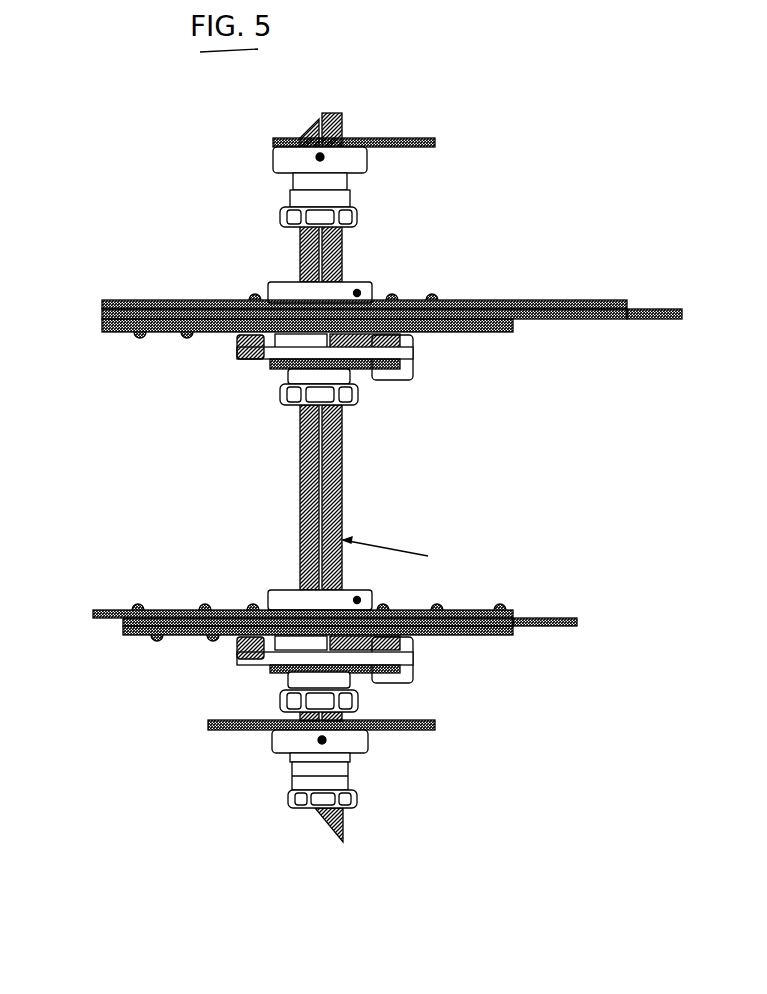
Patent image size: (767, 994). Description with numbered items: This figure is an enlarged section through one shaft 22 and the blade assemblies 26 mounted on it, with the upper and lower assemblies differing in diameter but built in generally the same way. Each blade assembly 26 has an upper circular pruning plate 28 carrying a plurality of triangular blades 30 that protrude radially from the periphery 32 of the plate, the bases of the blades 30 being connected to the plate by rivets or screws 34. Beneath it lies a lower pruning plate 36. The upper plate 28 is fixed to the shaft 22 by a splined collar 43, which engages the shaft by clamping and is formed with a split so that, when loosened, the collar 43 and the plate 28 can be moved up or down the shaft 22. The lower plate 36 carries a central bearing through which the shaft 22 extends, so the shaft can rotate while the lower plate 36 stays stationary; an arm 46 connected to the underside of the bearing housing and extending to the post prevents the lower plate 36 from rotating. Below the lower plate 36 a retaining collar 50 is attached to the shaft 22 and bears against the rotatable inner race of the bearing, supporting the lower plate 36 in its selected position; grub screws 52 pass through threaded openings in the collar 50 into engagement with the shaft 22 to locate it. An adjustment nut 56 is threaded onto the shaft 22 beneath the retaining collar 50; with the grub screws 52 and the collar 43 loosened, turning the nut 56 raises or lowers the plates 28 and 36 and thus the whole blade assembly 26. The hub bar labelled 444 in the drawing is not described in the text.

The shaft 22 is at (343, 247).
The blade assembly 26 is at (417, 451).
The upper circular pruning plate 28 is at (520, 300).
The blades 30 is at (663, 320).
The periphery 32 is at (630, 310).
The rivets or screws 34 is at (600, 297).
The lower pruning plate 36 is at (483, 333).
The splined collar 43 is at (280, 278).
The hub bar 444 is at (293, 340).
The arm 46 is at (263, 347).
The retaining collar 50 is at (343, 413).
The grub screws 52 is at (365, 377).
The adjustment nut 56 is at (298, 410).